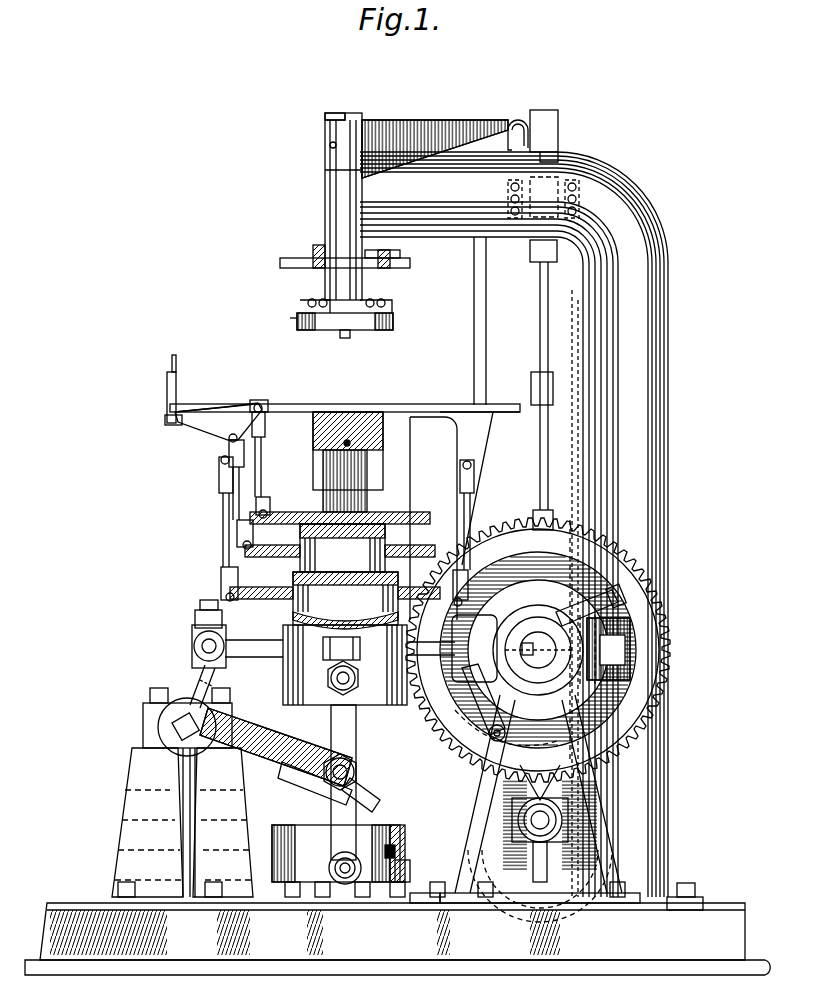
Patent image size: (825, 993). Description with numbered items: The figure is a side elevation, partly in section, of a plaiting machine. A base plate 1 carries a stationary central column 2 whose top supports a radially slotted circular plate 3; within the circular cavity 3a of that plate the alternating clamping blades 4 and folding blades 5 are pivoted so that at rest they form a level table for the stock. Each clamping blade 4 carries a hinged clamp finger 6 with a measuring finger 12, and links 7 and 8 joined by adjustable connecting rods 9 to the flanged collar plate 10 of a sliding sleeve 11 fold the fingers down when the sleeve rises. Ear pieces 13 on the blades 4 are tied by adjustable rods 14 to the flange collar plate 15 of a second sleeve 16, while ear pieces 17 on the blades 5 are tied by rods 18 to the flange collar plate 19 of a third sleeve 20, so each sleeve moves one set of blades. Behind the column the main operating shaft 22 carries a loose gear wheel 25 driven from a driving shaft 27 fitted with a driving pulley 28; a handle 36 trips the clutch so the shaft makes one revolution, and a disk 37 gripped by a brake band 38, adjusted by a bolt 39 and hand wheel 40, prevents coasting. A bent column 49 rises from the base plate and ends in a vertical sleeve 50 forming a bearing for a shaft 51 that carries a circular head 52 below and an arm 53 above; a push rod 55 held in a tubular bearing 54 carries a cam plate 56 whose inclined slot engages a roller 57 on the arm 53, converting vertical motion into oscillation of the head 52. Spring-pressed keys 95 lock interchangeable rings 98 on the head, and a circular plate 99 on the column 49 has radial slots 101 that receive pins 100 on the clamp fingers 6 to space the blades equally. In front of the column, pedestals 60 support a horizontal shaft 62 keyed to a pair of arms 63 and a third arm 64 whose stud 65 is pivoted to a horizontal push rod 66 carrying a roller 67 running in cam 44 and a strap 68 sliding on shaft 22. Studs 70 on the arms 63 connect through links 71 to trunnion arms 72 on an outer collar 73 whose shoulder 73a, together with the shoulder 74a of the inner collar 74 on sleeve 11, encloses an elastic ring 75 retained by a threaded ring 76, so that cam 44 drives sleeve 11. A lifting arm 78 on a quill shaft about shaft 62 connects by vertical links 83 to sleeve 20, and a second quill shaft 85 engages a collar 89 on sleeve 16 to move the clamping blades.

The base plate 1 is at (397, 939).
The stationary vertical column 2 is at (383, 435).
The circular plate 3 is at (325, 404).
The circular cavity 3a is at (412, 513).
The clamping blades 4 is at (225, 404).
The folding blades 5 is at (448, 404).
The clamp fingers 6 is at (167, 380).
The links 7 is at (200, 422).
The links 8 is at (262, 420).
The adjustable connecting rods 9 is at (265, 460).
The flanged collar plate 10 is at (270, 505).
The sliding sleeve 11 is at (337, 692).
The measuring fingers 12 is at (176, 362).
The depending ear pieces 13 is at (230, 445).
The adjustable rods 14 is at (220, 500).
The flange collar plate 15 is at (252, 555).
The second sleeve 16 is at (290, 728).
The depending ear pieces 17 is at (488, 430).
The adjustable rods 18 is at (222, 523).
The flange collar plate 19 is at (335, 592).
The third sleeve 20 is at (345, 665).
The main operating shaft 22 is at (583, 650).
The gear wheel 25 is at (672, 705).
The driving shaft 27 is at (565, 822).
The driving pulley 28 is at (640, 795).
The handle 36 is at (474, 360).
The disk 37 is at (630, 672).
The brake band 38 is at (630, 655).
The bolt 39 is at (610, 628).
The hand wheel 40 is at (618, 600).
The cam 44 is at (620, 578).
The bent column 49 is at (668, 390).
The vertical sleeve 50 is at (325, 192).
The shaft 51 is at (335, 113).
The circular head 52 is at (393, 325).
The arm 53 is at (420, 120).
The tubular bearing 54 is at (560, 175).
The push rod 55 is at (540, 318).
The cam plate 56 is at (543, 110).
The roller 57 is at (512, 115).
The pedestals 60 is at (153, 822).
The horizontal shaft 62 is at (150, 738).
The radially extending arms 63 is at (280, 740).
The third arm 64 is at (195, 676).
The stud 65 is at (192, 648).
The horizontal push rod 66 is at (250, 625).
The roller 67 is at (485, 700).
The strap 68 is at (474, 648).
The studs 70 is at (354, 770).
The connecting links 71 is at (378, 800).
The trunnion arms 72 is at (329, 870).
The outer collar 73 is at (282, 836).
The inwardly projecting shoulder 73a is at (410, 866).
The inner collar 74 is at (390, 830).
The outwardly projecting shoulder 74a is at (405, 840).
The ring of elastic material 75 is at (405, 852).
The ring 76 is at (425, 903).
The lifting arm 78 is at (300, 776).
The vertical connecting links 83 is at (340, 742).
The second quill shaft 85 is at (223, 822).
The collar 89 is at (358, 778).
The keys 95 is at (388, 306).
The rings 98 is at (297, 320).
The circular plate 99 is at (313, 250).
The projecting pins 100 is at (170, 422).
The radial slots 101 is at (280, 262).